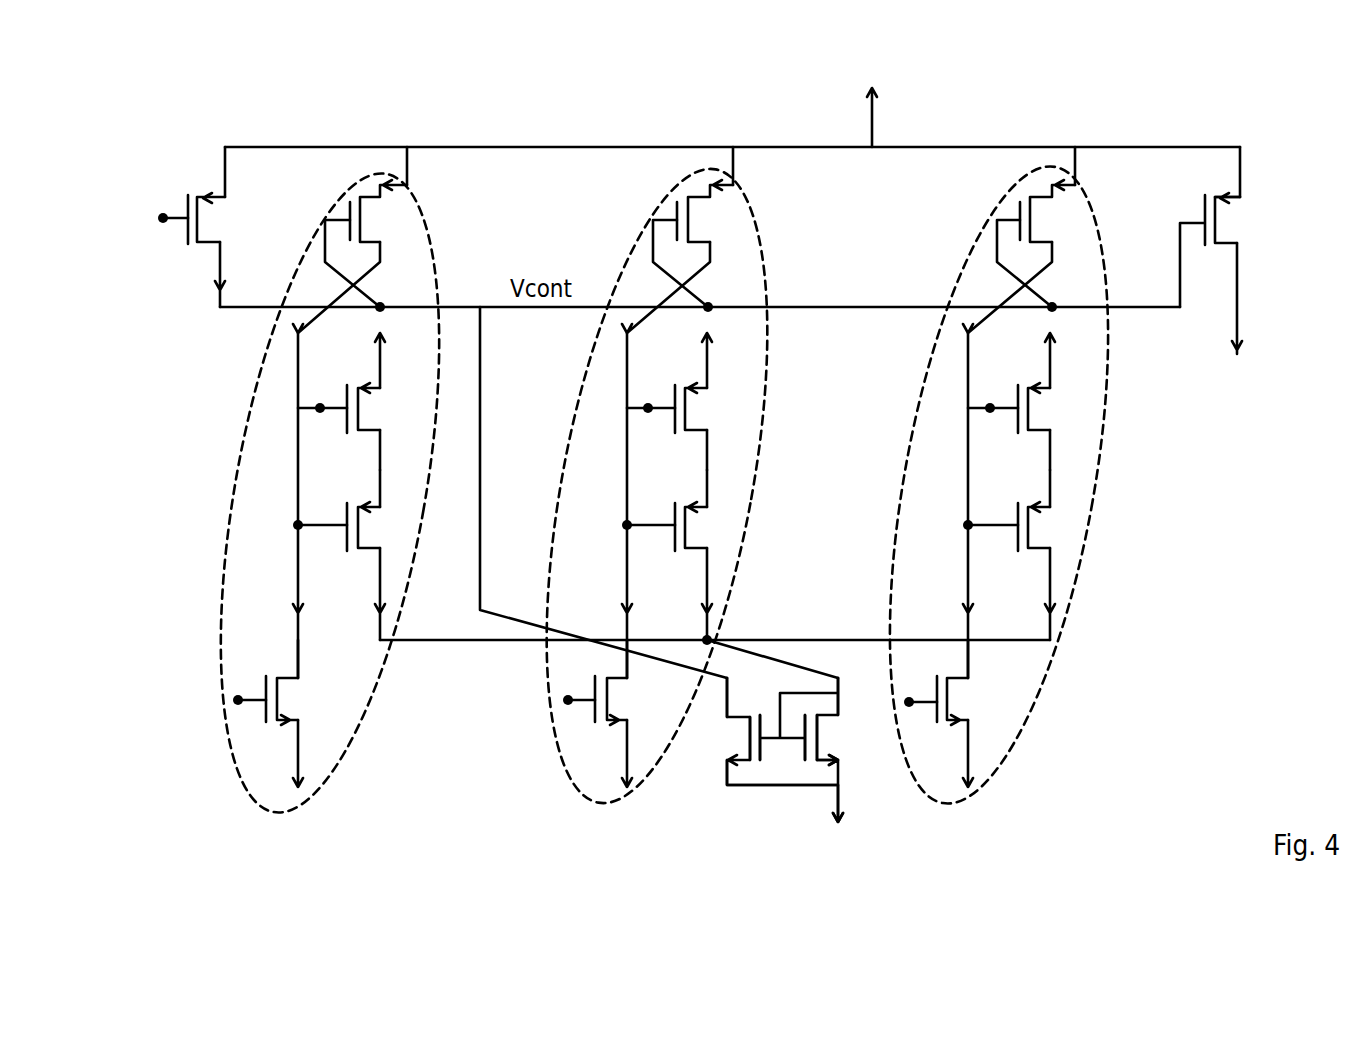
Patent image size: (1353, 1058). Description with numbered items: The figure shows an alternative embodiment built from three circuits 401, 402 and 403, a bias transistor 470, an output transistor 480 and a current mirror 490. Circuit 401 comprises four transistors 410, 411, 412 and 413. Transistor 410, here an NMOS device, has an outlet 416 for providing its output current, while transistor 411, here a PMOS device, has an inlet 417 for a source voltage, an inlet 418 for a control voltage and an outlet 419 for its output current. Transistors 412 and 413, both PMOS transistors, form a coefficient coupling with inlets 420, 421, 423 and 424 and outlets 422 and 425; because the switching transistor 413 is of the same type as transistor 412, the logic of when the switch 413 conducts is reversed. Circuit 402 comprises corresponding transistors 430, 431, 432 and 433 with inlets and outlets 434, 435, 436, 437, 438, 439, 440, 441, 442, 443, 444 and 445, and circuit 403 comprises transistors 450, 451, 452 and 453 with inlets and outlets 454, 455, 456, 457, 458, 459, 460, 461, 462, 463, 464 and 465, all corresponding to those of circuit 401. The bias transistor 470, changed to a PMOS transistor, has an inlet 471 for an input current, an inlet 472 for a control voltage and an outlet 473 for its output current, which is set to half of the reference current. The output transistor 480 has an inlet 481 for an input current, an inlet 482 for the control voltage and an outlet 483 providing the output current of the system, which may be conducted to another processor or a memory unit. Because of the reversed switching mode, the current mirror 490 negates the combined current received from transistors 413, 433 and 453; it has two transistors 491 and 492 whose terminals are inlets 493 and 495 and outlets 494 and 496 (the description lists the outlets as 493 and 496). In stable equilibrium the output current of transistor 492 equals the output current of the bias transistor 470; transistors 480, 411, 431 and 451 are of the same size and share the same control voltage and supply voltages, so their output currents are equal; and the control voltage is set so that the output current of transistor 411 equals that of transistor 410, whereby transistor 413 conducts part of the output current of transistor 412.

The circuit 401 is at (318, 205).
The circuit 402 is at (643, 203).
The circuit 403 is at (975, 205).
The transistor 410 is at (293, 705).
The transistor 411 is at (383, 223).
The transistor 412 is at (383, 413).
The switching transistor 413 is at (380, 527).
The outlet 416 is at (298, 650).
The inlet 417 is at (407, 172).
The inlet 418 is at (327, 220).
The outlet 419 is at (383, 252).
The inlet 420 is at (380, 367).
The inlet 421 is at (320, 408).
The outlet 422 is at (380, 455).
The inlet 423 is at (380, 473).
The inlet 424 is at (298, 525).
The outlet 425 is at (380, 568).
The transistor 430 is at (627, 702).
The transistor 431 is at (713, 223).
The transistor 432 is at (707, 408).
The transistor 433 is at (707, 530).
The inlet 434 is at (627, 657).
The inlet 435 is at (568, 700).
The outlet 436 is at (628, 753).
The inlet 437 is at (733, 167).
The inlet 438 is at (655, 220).
The outlet 439 is at (713, 253).
The inlet 440 is at (708, 367).
The inlet 441 is at (648, 408).
The outlet 442 is at (710, 447).
The inlet 443 is at (710, 492).
The inlet 444 is at (627, 525).
The outlet 445 is at (710, 570).
The transistor 450 is at (972, 702).
The transistor 451 is at (1050, 223).
The transistor 452 is at (1048, 410).
The transistor 453 is at (1048, 530).
The inlet 454 is at (913, 705).
The inlet 455 is at (972, 750).
The outlet 456 is at (972, 658).
The inlet 457 is at (1075, 170).
The inlet 458 is at (997, 220).
The outlet 459 is at (1052, 253).
The inlet 460 is at (1050, 368).
The inlet 461 is at (990, 410).
The outlet 462 is at (1052, 448).
The inlet 463 is at (1052, 490).
The inlet 464 is at (968, 527).
The outlet 465 is at (1052, 570).
The bias transistor 470 is at (223, 222).
The inlet 471 is at (225, 168).
The inlet 472 is at (163, 218).
The outlet 473 is at (220, 260).
The output transistor 480 is at (1240, 218).
The inlet 481 is at (1243, 170).
The inlet 482 is at (1218, 187).
The outlet 483 is at (1238, 262).
The current mirror 490 is at (783, 740).
The transistor 491 is at (830, 743).
The transistor 492 is at (727, 737).
The inlet 493 is at (840, 700).
The differential pair output wire 494 is at (825, 785).
The inlet 495 is at (727, 700).
The outlet 496 is at (738, 785).